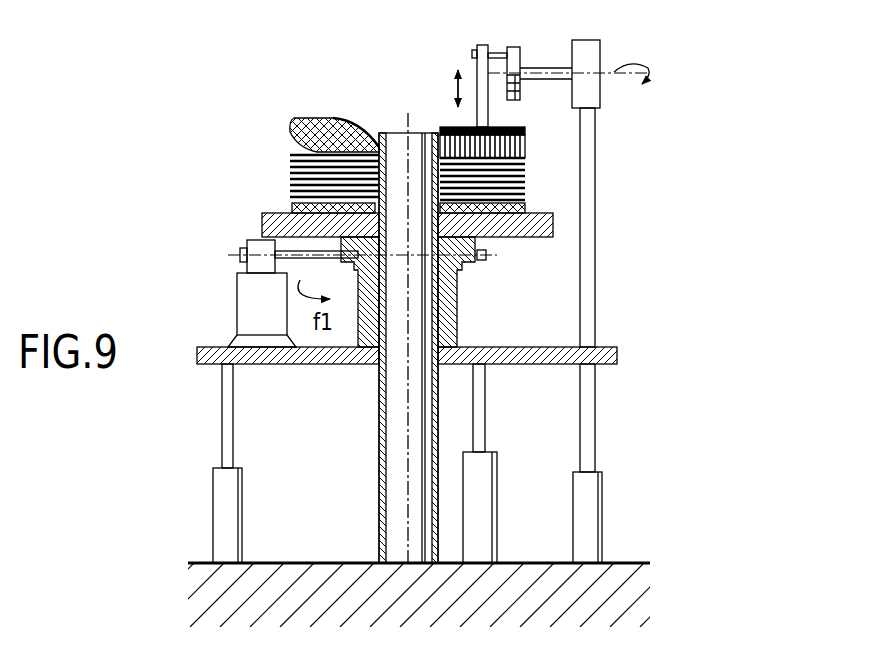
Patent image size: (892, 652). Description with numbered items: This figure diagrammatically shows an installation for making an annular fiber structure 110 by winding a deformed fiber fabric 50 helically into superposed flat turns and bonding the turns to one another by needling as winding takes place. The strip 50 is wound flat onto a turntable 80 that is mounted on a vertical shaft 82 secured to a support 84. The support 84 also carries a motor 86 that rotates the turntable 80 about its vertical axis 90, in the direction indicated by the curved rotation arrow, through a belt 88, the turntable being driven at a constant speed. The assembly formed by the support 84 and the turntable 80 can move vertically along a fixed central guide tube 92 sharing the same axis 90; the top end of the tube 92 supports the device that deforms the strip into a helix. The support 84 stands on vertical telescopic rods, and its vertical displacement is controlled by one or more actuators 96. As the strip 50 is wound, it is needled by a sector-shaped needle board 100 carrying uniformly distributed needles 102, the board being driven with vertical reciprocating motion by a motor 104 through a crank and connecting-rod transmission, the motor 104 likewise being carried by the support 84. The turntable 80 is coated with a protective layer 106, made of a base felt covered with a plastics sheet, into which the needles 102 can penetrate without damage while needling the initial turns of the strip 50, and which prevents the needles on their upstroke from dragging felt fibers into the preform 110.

The fabric 50 is at (317, 118).
The turntable 80 is at (262, 230).
The vertical shaft 82 is at (450, 312).
The support 84 is at (523, 366).
The motor 86 is at (244, 302).
The belt 88 is at (270, 259).
The vertical axis 90 is at (408, 438).
The central guide tube 92 is at (383, 480).
The actuators 96 is at (483, 497).
The needle board 100 is at (525, 129).
The needles 102 is at (525, 148).
The motor 104 is at (600, 44).
The protective layer 106 is at (525, 203).
The structure 110 is at (288, 181).